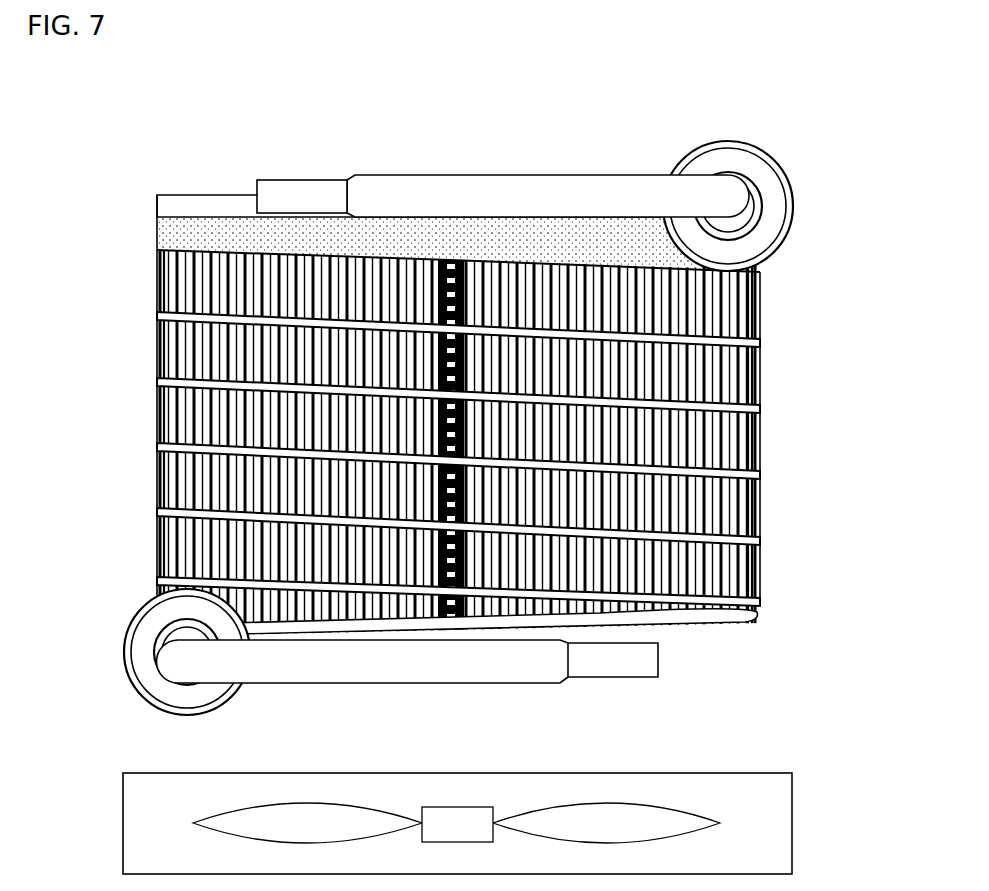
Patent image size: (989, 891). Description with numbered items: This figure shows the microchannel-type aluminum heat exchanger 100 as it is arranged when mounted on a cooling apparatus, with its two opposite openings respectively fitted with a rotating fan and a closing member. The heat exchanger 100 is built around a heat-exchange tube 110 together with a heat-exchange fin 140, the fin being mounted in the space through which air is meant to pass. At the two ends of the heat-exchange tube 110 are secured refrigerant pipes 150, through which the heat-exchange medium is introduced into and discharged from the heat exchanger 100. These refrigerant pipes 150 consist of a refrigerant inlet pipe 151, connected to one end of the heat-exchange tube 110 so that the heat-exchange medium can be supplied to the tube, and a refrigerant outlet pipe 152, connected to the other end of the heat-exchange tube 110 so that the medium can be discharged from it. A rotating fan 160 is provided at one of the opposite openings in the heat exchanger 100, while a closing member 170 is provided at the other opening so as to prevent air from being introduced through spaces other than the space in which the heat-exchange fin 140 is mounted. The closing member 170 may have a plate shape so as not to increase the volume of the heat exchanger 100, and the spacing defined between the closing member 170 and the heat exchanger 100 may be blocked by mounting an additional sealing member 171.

The microchannel-type aluminum heat exchanger 100 is at (228, 146).
The heat-exchange tube 110 is at (757, 344).
The heat-exchange fin 140 is at (757, 438).
The refrigerant pipes 150 is at (449, 400).
The refrigerant inlet pipe 151 is at (776, 206).
The refrigerant outlet pipe 152 is at (574, 185).
The rotating fan 160 is at (768, 818).
The closing member 170 is at (163, 207).
The sealing member 171 is at (163, 235).